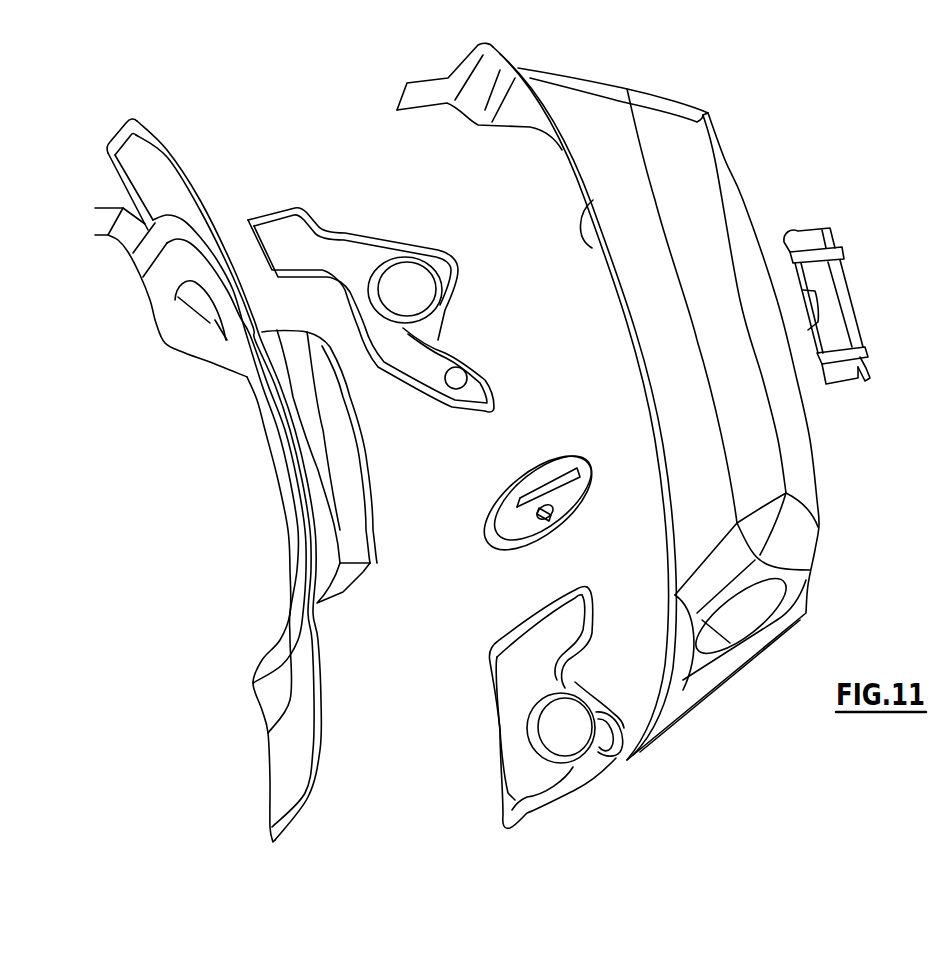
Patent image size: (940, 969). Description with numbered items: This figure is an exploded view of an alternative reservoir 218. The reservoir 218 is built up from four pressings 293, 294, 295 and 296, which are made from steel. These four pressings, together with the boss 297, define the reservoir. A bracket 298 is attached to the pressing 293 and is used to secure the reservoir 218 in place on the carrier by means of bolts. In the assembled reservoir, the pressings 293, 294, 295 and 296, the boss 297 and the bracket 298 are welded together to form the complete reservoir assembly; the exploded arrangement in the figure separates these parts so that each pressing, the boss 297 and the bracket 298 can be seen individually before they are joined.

The reservoir 218 is at (802, 108).
The pressing 293 is at (610, 84).
The pressing 294 is at (182, 340).
The pressing 295 is at (352, 232).
The pressing 296 is at (487, 670).
The boss 297 is at (514, 487).
The bracket 298 is at (835, 229).